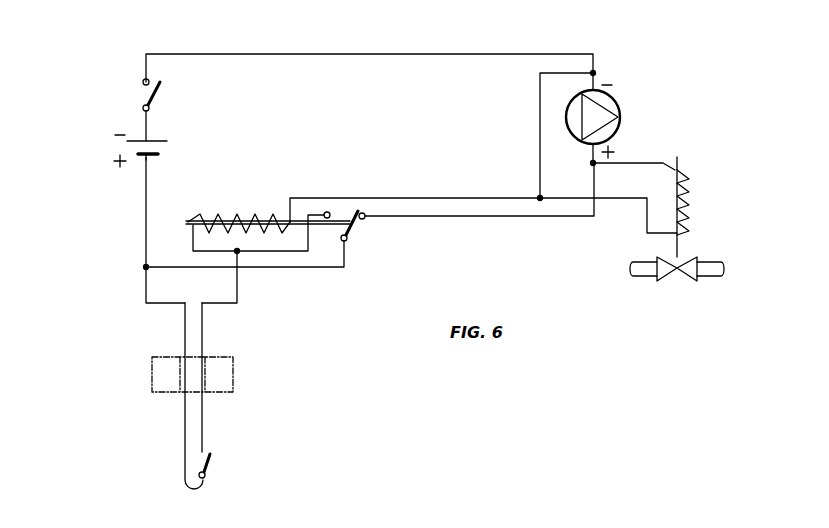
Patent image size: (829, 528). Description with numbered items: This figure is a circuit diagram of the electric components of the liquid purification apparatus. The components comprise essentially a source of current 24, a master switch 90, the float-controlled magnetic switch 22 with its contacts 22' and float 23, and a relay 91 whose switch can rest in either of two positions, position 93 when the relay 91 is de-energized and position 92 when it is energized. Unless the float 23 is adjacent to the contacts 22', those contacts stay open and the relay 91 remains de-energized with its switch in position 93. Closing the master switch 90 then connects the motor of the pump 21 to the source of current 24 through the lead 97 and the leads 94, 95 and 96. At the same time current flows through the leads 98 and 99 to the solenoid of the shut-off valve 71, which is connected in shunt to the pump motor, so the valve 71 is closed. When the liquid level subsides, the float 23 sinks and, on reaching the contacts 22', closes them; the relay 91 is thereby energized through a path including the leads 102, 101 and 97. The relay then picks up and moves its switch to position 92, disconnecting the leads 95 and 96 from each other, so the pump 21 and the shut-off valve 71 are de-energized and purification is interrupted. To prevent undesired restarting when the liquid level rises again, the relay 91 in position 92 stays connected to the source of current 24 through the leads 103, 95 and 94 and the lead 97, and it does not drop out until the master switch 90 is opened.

The master switch 90 is at (141, 95).
The source of current 24 is at (127, 145).
The lead 97 is at (480, 56).
The pump 21 is at (618, 108).
The lead 94 is at (146, 220).
The relay 91 is at (238, 216).
The switch position 92 is at (342, 232).
The switch position 93 is at (356, 226).
The lead 95 is at (346, 262).
The lead 96 is at (503, 217).
The lead 98 is at (572, 200).
The lead 99 is at (645, 162).
The shut-off valve 71 is at (685, 272).
The lead 101 is at (240, 292).
The lead 102 is at (146, 287).
The lead 103 is at (300, 252).
The float 23 is at (162, 375).
The float-controlled magnetic switch 22 is at (165, 396).
The contacts 22' is at (227, 466).